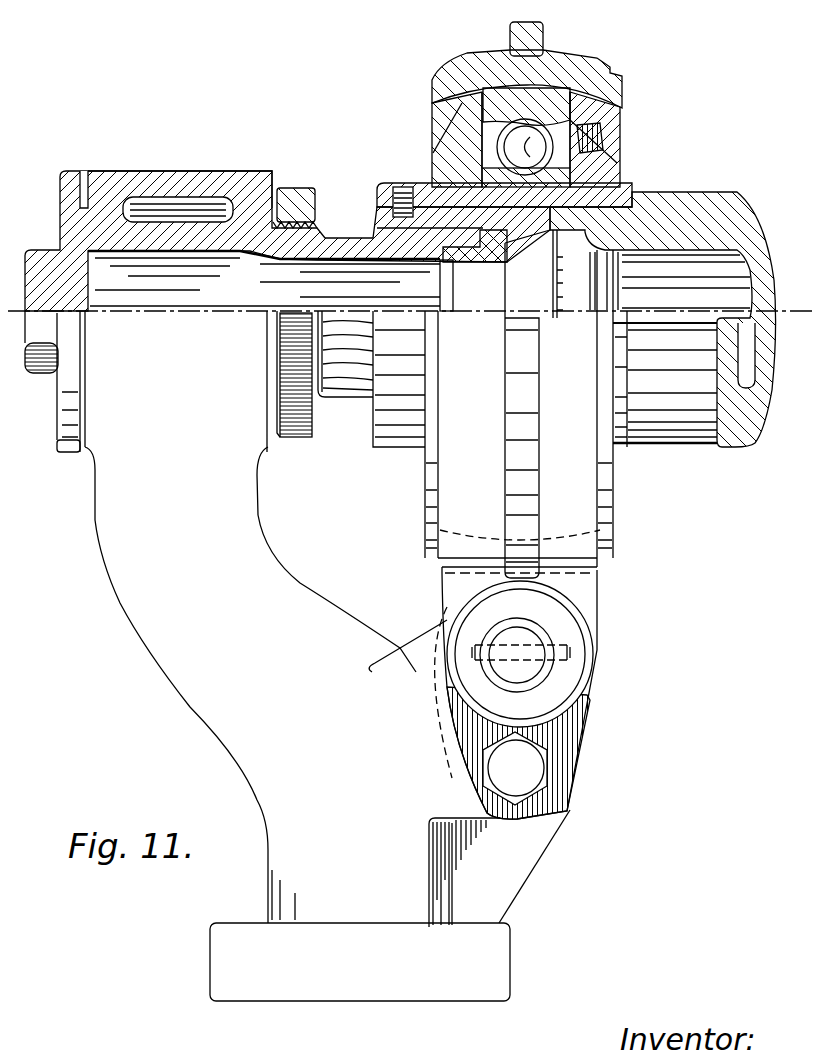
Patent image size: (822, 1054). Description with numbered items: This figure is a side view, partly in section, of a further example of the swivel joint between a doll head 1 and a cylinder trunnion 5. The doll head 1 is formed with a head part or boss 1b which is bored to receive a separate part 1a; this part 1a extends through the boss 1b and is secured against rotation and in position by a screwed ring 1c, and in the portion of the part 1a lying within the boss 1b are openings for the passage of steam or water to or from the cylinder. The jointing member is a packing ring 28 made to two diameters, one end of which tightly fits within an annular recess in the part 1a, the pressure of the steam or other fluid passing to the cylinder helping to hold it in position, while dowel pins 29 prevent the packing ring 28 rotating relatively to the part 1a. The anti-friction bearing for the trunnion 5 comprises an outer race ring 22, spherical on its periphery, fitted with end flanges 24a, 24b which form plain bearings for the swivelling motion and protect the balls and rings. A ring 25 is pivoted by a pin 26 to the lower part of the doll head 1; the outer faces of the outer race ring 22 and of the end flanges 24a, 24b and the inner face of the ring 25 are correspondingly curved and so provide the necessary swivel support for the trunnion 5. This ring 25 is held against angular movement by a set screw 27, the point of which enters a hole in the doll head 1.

The doll head 1 is at (297, 586).
The part of the doll head 1a is at (265, 355).
The head part or boss 1b is at (161, 171).
The screwed ring 1c is at (297, 187).
The cylinder trunnion 5 is at (698, 200).
The outer race ring 22 is at (526, 106).
The end flange 24a is at (432, 140).
The end flange 24b is at (619, 156).
The ring 25 is at (579, 55).
The pin 26 is at (533, 640).
The set screw 27 is at (523, 772).
The packing ring 28 is at (494, 266).
The dowel pins 29 is at (432, 286).